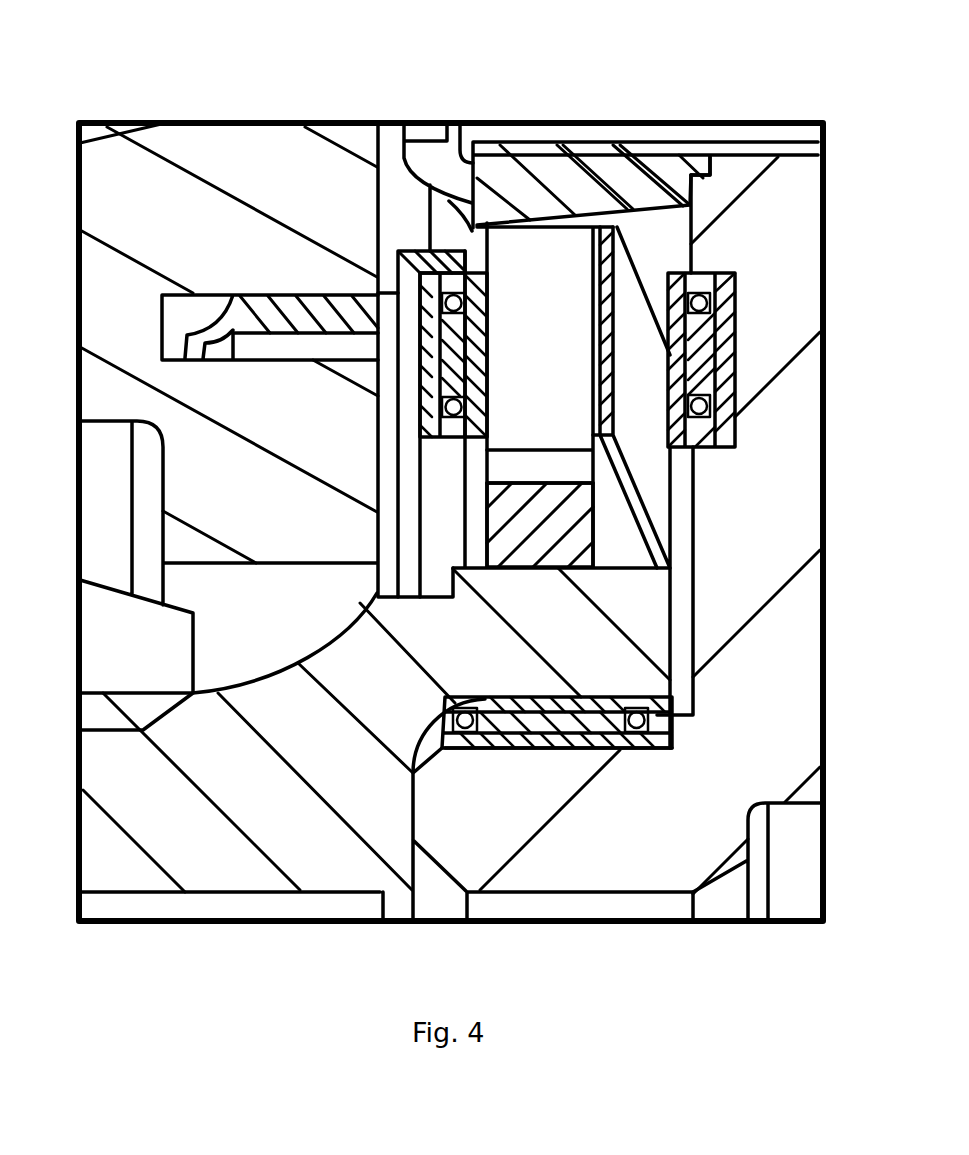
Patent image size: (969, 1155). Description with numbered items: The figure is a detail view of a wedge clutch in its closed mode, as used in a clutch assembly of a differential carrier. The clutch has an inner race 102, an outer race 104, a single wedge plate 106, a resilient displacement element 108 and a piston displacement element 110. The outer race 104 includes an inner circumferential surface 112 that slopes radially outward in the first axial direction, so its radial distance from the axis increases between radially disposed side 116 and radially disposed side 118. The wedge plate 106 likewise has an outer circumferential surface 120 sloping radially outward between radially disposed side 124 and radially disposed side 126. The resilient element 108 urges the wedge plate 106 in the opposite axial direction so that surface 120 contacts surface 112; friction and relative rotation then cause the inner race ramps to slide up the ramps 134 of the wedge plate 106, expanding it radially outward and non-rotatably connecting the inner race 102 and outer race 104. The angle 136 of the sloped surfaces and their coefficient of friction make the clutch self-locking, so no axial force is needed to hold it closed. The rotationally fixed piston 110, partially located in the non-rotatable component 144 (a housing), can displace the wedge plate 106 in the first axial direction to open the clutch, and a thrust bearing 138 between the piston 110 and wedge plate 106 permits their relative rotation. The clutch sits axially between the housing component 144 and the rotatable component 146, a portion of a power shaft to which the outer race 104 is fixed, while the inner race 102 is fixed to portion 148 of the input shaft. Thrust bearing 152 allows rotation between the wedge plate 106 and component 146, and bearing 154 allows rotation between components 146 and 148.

The inner race 102 is at (596, 538).
The outer race 104 is at (640, 215).
The wedge plate 106 is at (562, 386).
The displacement element 108 is at (613, 420).
The displacement element 110 is at (293, 307).
The inner circumferential surface 112 is at (652, 170).
The radially disposed side 116 is at (462, 240).
The radially disposed side 118 is at (695, 192).
The outer circumferential surface 120 is at (530, 215).
The radially disposed side 124 is at (437, 195).
The radially disposed side 126 is at (617, 190).
The circumferential sloping ramps 134 is at (567, 467).
The angle 136 is at (573, 194).
The thrust bearing 138 is at (420, 258).
The non-rotatable component 144 is at (157, 200).
The rotatable component 146 is at (804, 182).
The portion of input shaft 148 is at (230, 868).
The thrust bearing 152 is at (736, 293).
The bearing 154 is at (637, 750).